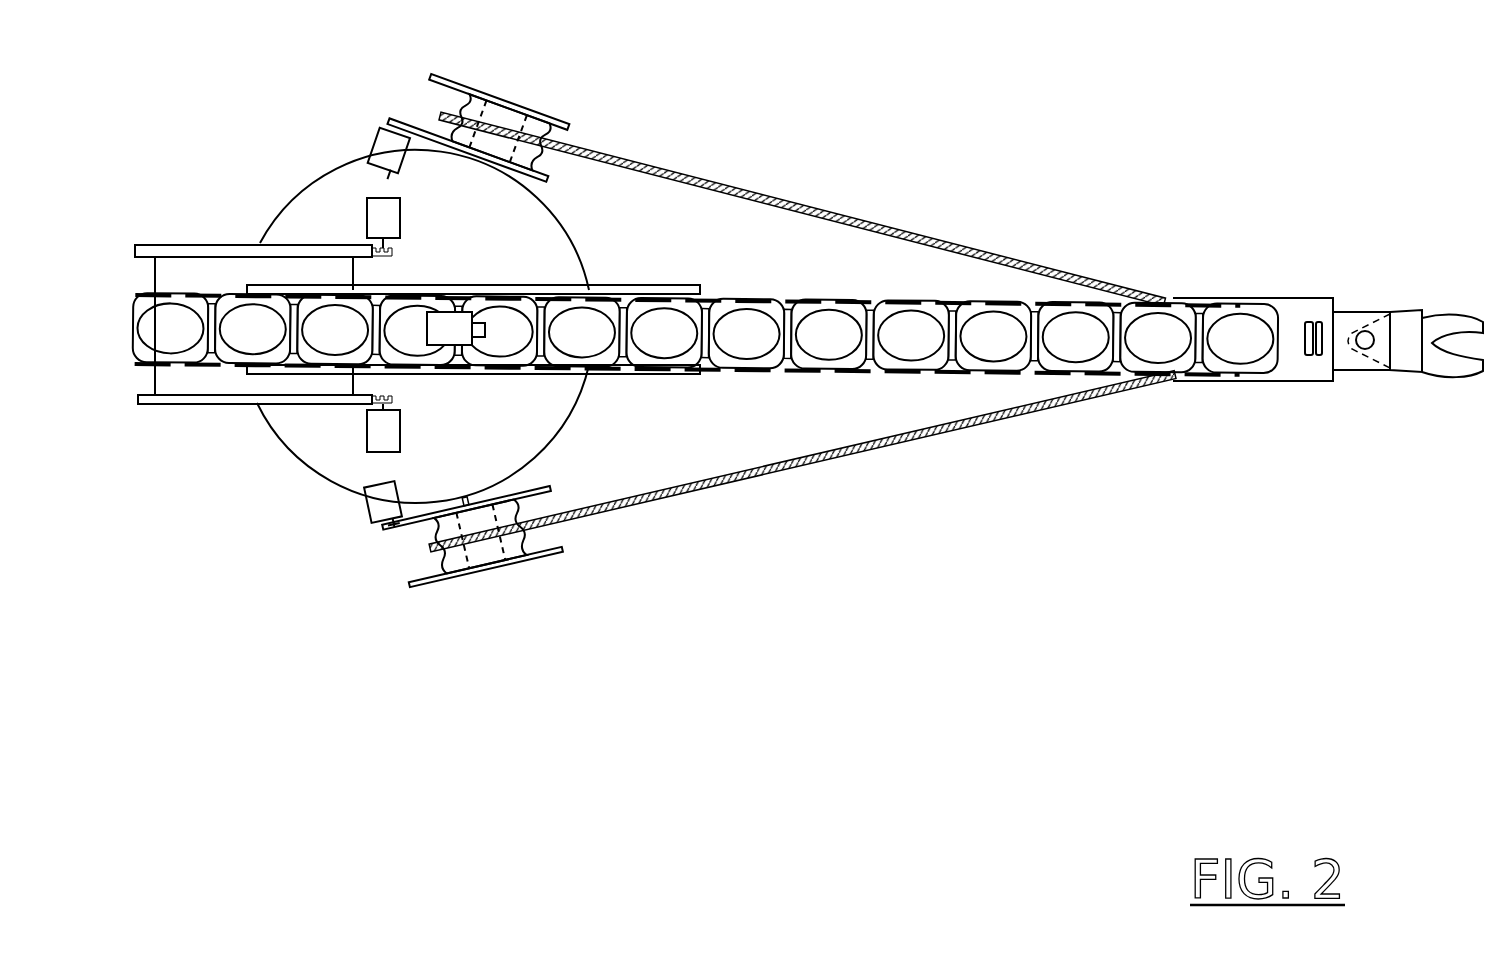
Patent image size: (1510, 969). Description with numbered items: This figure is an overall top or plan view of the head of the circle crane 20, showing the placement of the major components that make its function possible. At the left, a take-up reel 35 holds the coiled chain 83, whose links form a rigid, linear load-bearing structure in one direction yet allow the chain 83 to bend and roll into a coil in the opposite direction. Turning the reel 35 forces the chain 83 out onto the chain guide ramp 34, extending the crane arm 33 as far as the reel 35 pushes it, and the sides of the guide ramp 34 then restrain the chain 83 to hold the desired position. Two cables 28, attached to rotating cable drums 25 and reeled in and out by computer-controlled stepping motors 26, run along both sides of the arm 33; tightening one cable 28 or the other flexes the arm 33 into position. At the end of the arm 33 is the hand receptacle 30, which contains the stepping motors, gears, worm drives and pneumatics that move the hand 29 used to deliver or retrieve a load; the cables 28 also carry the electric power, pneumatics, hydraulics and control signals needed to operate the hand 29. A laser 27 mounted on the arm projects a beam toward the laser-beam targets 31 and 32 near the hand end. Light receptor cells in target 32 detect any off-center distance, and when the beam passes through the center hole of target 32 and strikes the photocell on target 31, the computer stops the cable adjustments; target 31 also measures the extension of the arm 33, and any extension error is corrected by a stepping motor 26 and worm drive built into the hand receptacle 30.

The circle crane 20 is at (310, 468).
The cable drums 25 is at (446, 597).
The stepping motors 26 is at (377, 435).
The laser 27 is at (450, 330).
The cables 28 is at (802, 461).
The hand 29 is at (1454, 259).
The hand receptacle 30 is at (1377, 239).
The laser-beam target 31 is at (1282, 207).
The laser-beam target 32 is at (1303, 333).
The crane arm 33 is at (1208, 407).
The chain guide ramp 34 is at (667, 290).
The reel 35 is at (220, 245).
The chain 83 is at (706, 302).